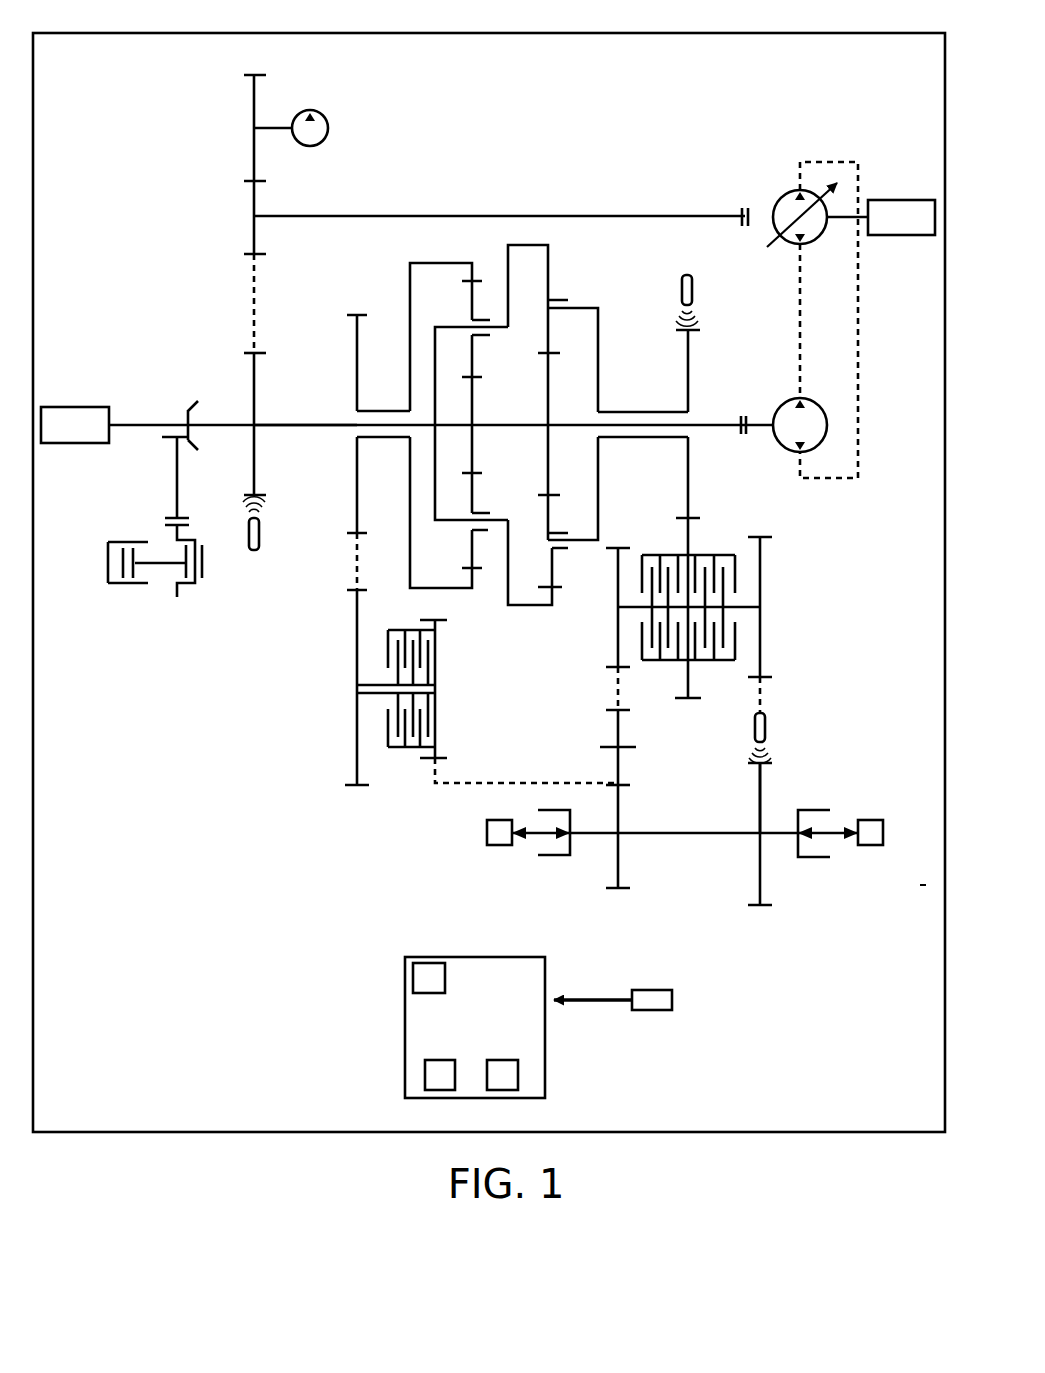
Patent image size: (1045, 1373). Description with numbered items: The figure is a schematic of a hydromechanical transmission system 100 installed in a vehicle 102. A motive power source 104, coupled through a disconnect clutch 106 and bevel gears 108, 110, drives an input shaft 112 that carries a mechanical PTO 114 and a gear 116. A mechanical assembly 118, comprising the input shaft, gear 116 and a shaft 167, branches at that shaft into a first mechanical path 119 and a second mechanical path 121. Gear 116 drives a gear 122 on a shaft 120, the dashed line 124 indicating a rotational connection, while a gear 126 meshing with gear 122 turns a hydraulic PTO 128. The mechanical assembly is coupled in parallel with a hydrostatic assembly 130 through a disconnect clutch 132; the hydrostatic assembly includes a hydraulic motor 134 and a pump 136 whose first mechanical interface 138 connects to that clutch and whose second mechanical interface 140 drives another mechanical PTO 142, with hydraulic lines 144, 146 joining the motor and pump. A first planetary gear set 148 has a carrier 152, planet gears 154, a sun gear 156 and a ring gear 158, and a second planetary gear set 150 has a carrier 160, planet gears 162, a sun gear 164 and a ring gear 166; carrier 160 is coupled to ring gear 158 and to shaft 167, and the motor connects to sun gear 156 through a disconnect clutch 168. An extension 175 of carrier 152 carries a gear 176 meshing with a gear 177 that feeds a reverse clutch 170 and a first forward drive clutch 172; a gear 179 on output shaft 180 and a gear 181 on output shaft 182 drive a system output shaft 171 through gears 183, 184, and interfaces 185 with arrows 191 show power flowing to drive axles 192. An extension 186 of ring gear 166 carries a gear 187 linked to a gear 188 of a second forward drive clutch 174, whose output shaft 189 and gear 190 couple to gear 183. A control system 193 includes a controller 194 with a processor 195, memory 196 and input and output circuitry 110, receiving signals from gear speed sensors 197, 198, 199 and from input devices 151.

The transmission system 100 is at (897, 88).
The vehicle 102 is at (48, 33).
The motive power source 104 is at (177, 634).
The power source disconnect clutch 106 is at (168, 518).
The gear 108 is at (156, 440).
The gear / input and output circuitry 110 is at (188, 407).
The input shaft 112 is at (229, 422).
The mechanical PTO 114 is at (46, 407).
The gear 116 is at (256, 400).
The mechanical assembly 118 is at (193, 284).
The first mechanical path 119 is at (320, 366).
The shaft 120 is at (322, 215).
The second mechanical path 121 is at (324, 442).
The gear 122 is at (252, 194).
The dashed line 124 is at (252, 315).
The gear 126 is at (258, 80).
The hydraulic PTO 128 is at (329, 128).
The hydrostatic assembly 130 is at (886, 172).
The disconnect clutch 132 is at (745, 198).
The hydraulic motor 134 is at (788, 400).
The hydraulic pump 136 is at (797, 190).
The first mechanical interface 138 is at (770, 234).
The second mechanical interface 140 is at (832, 234).
The mechanical PTO 142 is at (879, 235).
The hydraulic line 144 is at (840, 160).
The hydraulic line 146 is at (798, 322).
The first planetary gear set 148 is at (578, 259).
The second planetary gear set 150 is at (400, 260).
The input device 151 is at (650, 990).
The carrier 152 is at (580, 308).
The planet gears 154 is at (548, 272).
The sun gear 156 is at (548, 410).
The ring gear 158 is at (542, 244).
The carrier 160 is at (467, 325).
The planet gears 162 is at (472, 283).
The sun gear 164 is at (474, 418).
The ring gear 166 is at (472, 263).
The shaft 167 is at (326, 422).
The disconnect clutch 168 is at (744, 410).
The reverse clutch 170 is at (649, 544).
The system output shaft 171 is at (652, 833).
The first forward drive clutch 172 is at (720, 544).
The second forward drive clutch 174 is at (394, 620).
The extension 175 is at (614, 412).
The gear 176 is at (686, 370).
The gear 177 is at (678, 508).
The gear 179 is at (618, 649).
The output shaft 180 is at (623, 610).
The gear 181 is at (762, 659).
The output shaft 182 is at (760, 610).
The gear 183 is at (620, 804).
The gear 184 is at (759, 802).
The interfaces 185 is at (553, 876).
The extension 186 is at (381, 411).
The gear 187 is at (356, 313).
The gear 188 is at (356, 632).
The output shaft 189 is at (356, 686).
The gear 190 is at (440, 753).
The arrows 191 is at (542, 840).
The drive axles 192 is at (486, 833).
The control system 193 is at (334, 1050).
The controller 194 is at (460, 1050).
The processor 195 is at (425, 1075).
The memory 196 is at (518, 1075).
The gear speed sensor 197 is at (254, 552).
The gear speed sensor 198 is at (765, 730).
The gear speed sensor 199 is at (692, 289).